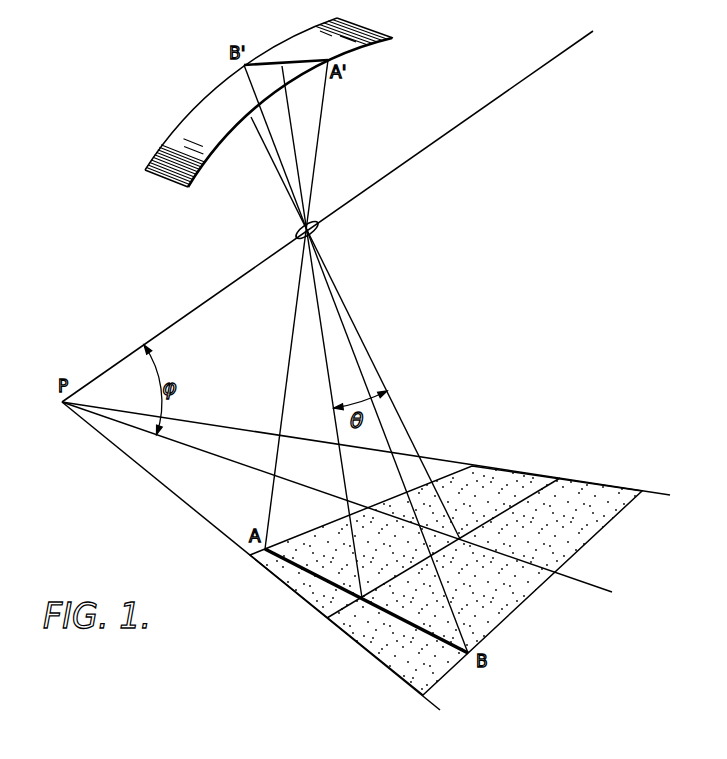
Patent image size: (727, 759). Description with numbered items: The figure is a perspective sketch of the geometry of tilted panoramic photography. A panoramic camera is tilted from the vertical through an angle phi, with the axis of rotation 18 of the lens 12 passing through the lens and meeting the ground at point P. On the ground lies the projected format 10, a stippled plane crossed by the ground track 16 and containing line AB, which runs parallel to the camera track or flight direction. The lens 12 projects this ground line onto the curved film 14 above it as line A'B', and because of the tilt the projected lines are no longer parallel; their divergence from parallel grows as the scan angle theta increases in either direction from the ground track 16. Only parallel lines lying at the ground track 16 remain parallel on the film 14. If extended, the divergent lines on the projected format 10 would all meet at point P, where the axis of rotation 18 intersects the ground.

The projected format 10 is at (507, 470).
The lens 12 is at (319, 229).
The film 14 is at (197, 113).
The ground track 16 is at (578, 580).
The axis of rotation 18 is at (220, 292).